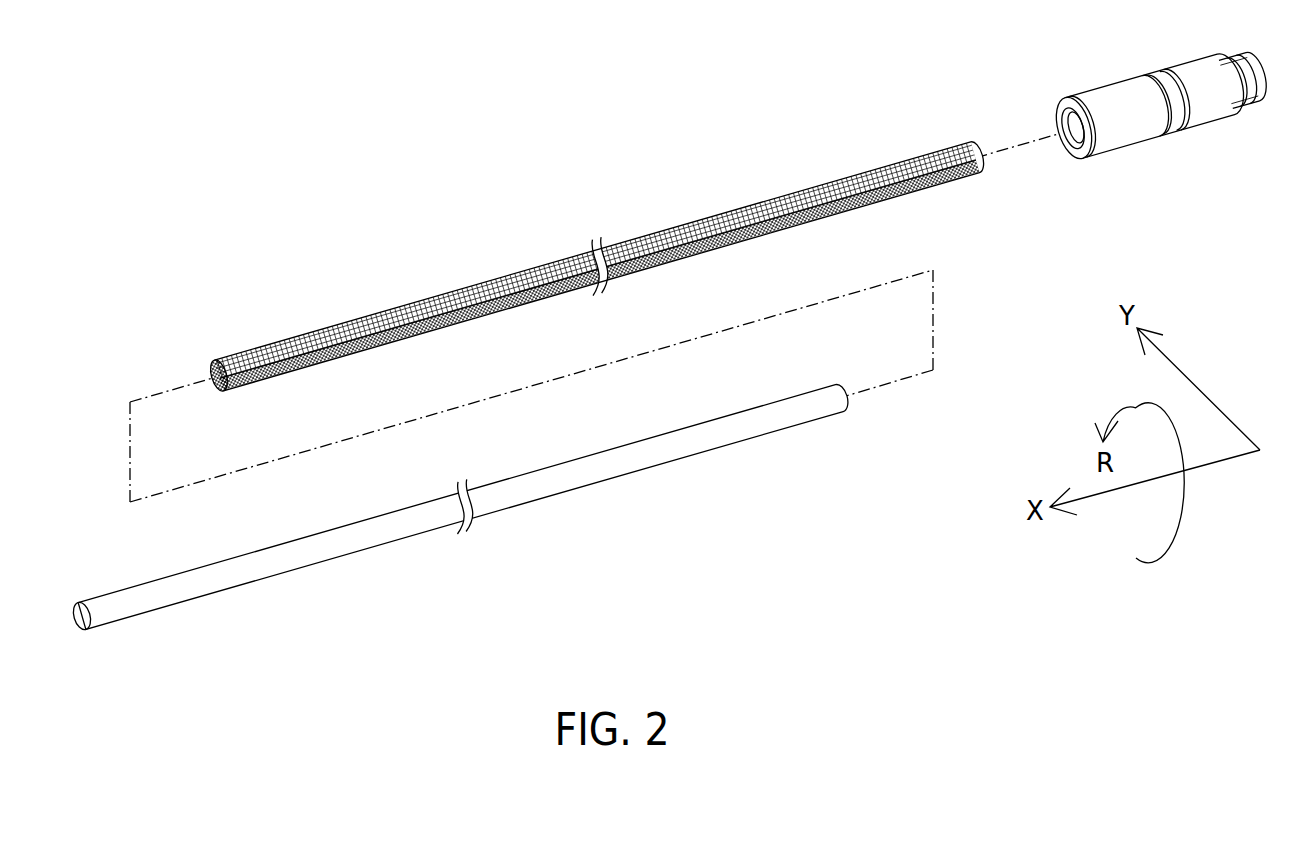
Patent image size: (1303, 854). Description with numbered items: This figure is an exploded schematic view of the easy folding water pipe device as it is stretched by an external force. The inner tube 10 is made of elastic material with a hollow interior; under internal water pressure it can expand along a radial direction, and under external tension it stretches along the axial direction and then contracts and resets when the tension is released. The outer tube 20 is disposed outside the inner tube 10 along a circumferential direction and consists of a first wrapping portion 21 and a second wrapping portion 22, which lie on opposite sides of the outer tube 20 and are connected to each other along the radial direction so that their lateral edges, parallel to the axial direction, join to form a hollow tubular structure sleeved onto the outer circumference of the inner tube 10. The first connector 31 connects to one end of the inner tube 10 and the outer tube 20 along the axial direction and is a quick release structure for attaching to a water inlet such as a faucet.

The inner tube 10 is at (628, 460).
The outer tube 20 is at (610, 268).
The first wrapping portion 21 is at (290, 340).
The second wrapping portion 22 is at (940, 187).
The first connector 31 is at (1213, 108).